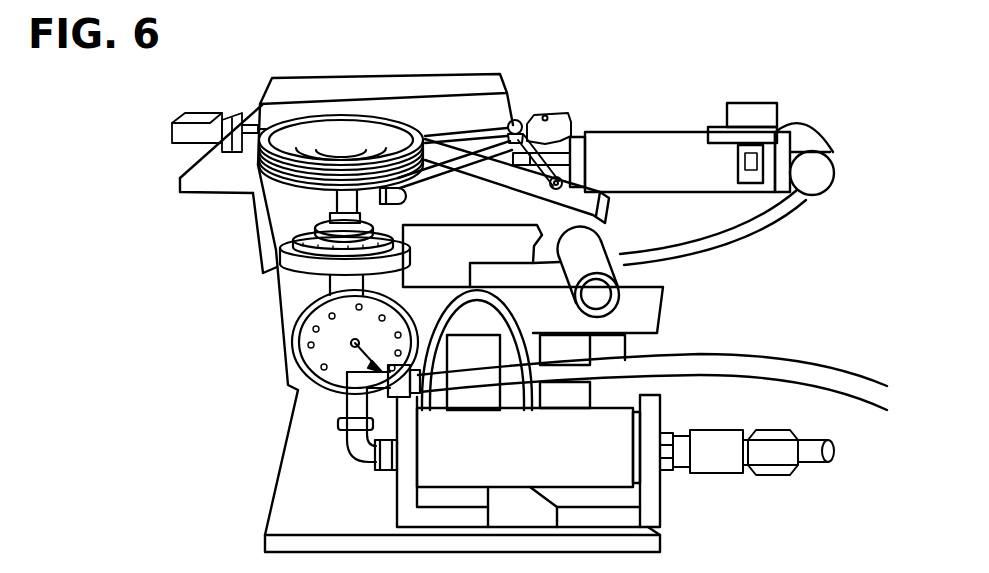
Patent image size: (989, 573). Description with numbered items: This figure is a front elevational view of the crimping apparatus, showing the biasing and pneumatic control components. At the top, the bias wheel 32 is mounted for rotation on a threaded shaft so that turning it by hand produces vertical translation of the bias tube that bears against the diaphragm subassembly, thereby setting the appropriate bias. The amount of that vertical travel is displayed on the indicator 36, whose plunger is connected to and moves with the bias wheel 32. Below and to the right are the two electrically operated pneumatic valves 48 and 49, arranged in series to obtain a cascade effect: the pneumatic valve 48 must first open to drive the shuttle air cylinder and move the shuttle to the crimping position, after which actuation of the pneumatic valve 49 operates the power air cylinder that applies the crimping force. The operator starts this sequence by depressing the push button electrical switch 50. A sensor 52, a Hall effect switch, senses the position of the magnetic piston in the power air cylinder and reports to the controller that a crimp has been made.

The bias wheel 32 is at (275, 246).
The indicator 36 is at (310, 342).
The electrically operated pneumatic valve 48 is at (553, 354).
The electrically operated pneumatic valve 49 is at (475, 357).
The push button electrical switch 50 is at (600, 300).
The sensor 52 is at (750, 118).